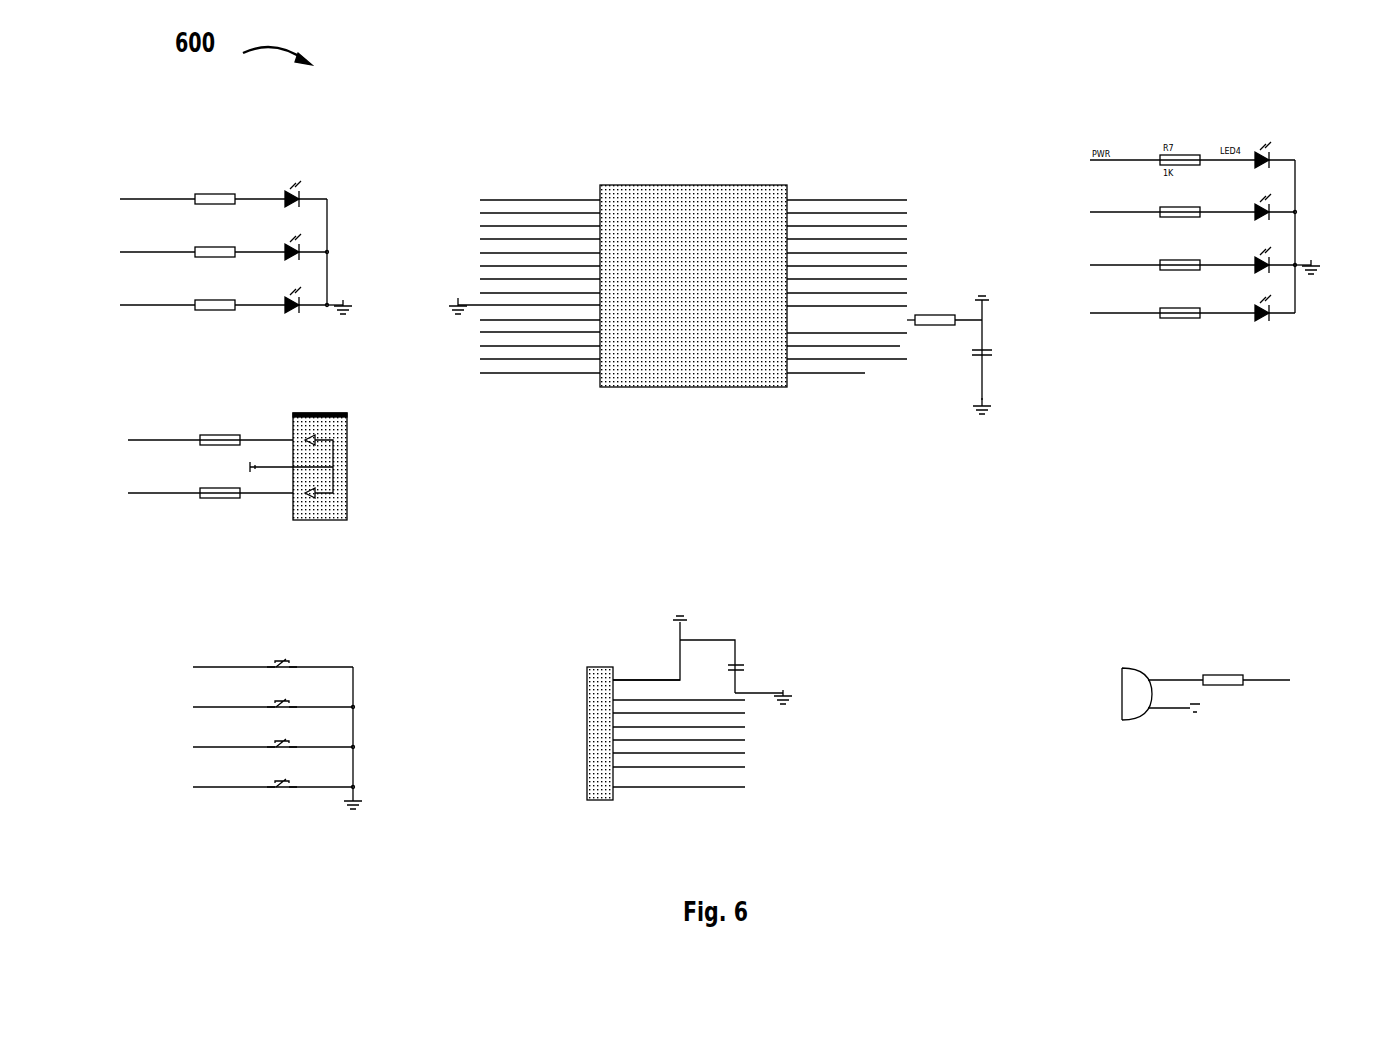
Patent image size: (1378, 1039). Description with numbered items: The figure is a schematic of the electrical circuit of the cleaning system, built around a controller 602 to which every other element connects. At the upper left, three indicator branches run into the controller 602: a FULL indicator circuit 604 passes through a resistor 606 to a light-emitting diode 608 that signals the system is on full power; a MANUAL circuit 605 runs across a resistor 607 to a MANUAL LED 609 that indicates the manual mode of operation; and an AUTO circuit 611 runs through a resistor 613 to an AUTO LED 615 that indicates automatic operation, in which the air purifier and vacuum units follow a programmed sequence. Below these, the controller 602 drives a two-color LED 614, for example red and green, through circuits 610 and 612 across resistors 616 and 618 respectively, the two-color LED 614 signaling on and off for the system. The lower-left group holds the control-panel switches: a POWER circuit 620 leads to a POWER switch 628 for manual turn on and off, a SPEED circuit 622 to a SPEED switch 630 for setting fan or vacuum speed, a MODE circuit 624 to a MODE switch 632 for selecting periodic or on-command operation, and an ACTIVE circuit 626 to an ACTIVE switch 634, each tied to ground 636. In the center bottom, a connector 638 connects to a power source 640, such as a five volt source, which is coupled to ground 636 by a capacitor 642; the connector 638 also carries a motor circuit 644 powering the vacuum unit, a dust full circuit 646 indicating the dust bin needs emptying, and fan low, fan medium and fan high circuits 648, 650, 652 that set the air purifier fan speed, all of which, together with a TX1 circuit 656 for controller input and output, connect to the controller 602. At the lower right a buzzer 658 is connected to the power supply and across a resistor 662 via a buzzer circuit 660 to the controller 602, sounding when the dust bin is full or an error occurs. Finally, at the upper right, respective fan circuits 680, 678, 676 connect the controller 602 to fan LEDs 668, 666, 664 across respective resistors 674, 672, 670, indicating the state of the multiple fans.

The controller 602 is at (745, 388).
The FULL indicator circuit 604 is at (132, 305).
The MANUAL circuit 605 is at (132, 252).
The resistor 606 is at (202, 305).
The resistor 607 is at (202, 250).
The light-emitting diode 608 is at (286, 302).
The MANUAL LED 609 is at (286, 247).
The circuit 610 is at (128, 440).
The AUTO circuit 611 is at (132, 197).
The circuit 612 is at (126, 494).
The resistor 613 is at (202, 197).
The two-color LED 614 is at (338, 414).
The AUTO LED 615 is at (286, 193).
The resistor 616 is at (218, 436).
The resistor 618 is at (218, 500).
The POWER circuit 620 is at (900, 333).
The SPEED circuit 622 is at (901, 279).
The MODE circuit 624 is at (897, 200).
The ACTIVE circuit 626 is at (907, 213).
The POWER switch 628 is at (270, 663).
The SPEED switch 630 is at (270, 704).
The MODE switch 632 is at (270, 744).
The ACTIVE switch 634 is at (270, 784).
The ground 636 is at (345, 293).
The connector 638 is at (594, 668).
The power source 640 is at (985, 306).
The capacitor 642 is at (990, 353).
The motor circuit 644 is at (901, 266).
The dust full circuit 646 is at (476, 228).
The fan low circuit 648 is at (480, 359).
The fan medium circuit 650 is at (480, 373).
The fan high circuit 652 is at (866, 373).
The TX1 circuit 656 is at (903, 293).
The buzzer 658 is at (1120, 681).
The buzzer circuit 660 is at (478, 253).
The resistor 662 is at (1204, 678).
The fan LED 664 is at (1255, 322).
The fan LED 666 is at (1253, 276).
The fan LED 668 is at (1256, 214).
The resistor 670 is at (1160, 319).
The resistor 672 is at (1180, 265).
The resistor 674 is at (1180, 212).
The fan circuit 676 is at (901, 253).
The fan circuit 678 is at (901, 239).
The fan circuit 680 is at (907, 226).